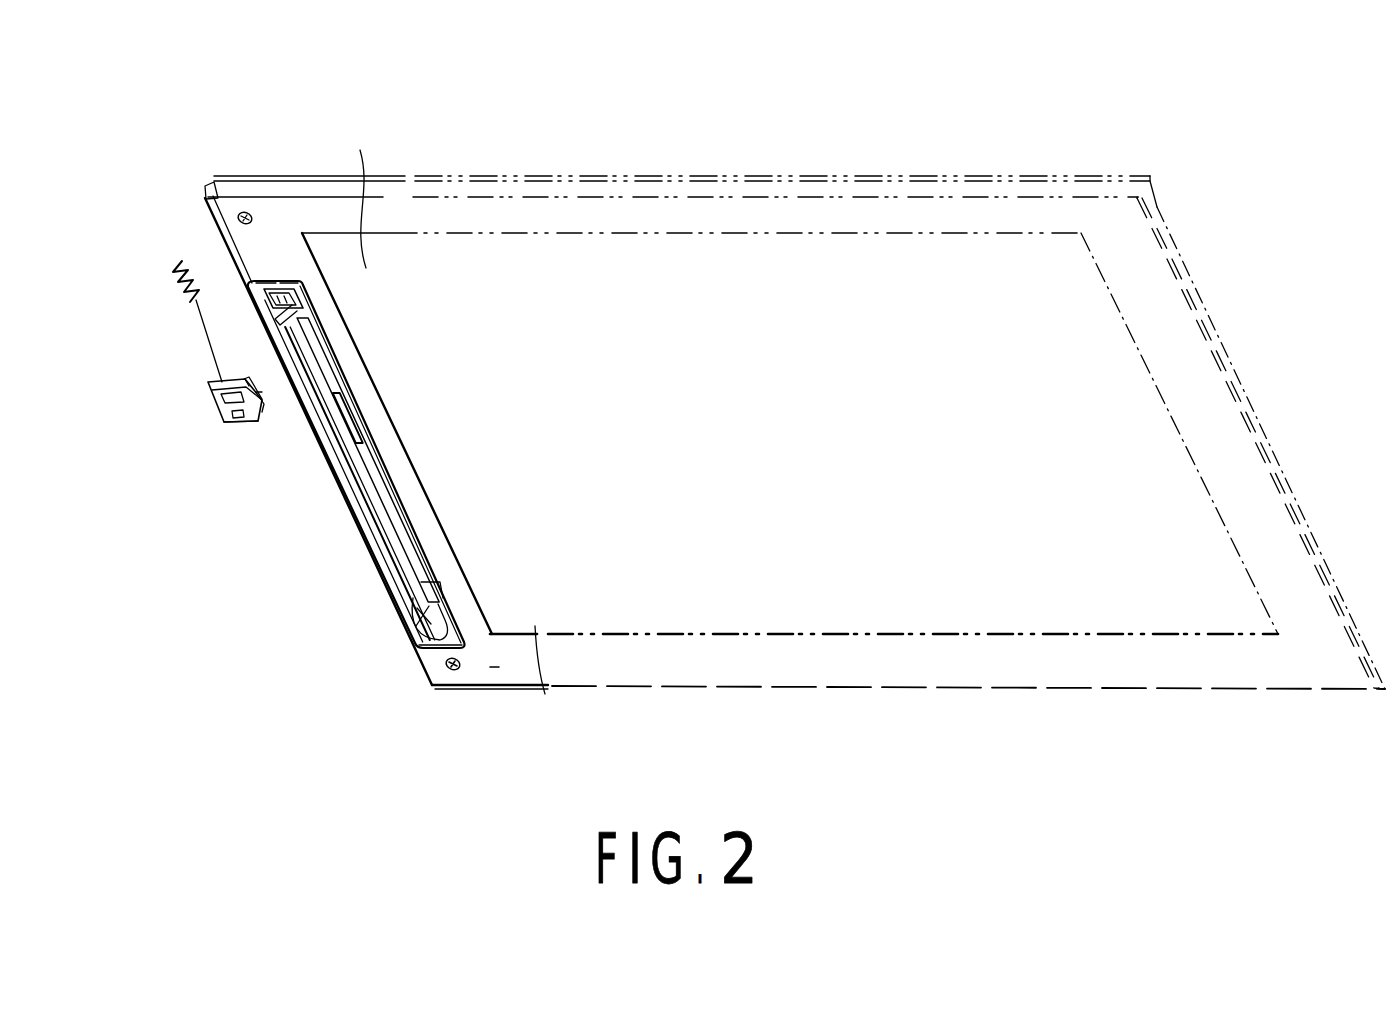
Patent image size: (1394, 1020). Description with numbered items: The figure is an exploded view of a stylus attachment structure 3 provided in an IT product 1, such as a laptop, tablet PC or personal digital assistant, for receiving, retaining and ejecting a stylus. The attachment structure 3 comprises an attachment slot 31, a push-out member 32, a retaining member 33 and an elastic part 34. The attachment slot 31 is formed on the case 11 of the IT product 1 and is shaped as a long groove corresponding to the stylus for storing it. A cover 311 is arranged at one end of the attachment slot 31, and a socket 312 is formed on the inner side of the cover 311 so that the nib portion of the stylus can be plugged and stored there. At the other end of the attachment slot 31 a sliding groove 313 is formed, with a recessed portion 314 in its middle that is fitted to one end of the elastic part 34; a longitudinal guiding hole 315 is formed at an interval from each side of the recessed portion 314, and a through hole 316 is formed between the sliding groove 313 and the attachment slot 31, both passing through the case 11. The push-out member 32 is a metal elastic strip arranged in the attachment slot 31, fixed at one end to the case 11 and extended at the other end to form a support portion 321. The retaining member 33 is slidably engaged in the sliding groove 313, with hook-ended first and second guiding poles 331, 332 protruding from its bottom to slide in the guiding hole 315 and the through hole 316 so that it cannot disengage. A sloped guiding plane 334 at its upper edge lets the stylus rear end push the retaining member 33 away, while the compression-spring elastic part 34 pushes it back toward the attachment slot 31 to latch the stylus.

The IT product 1 is at (391, 132).
The case 11 is at (523, 658).
The stylus attachment structure 3 is at (190, 374).
The attachment slot 31 is at (387, 518).
The cover 311 is at (417, 645).
The socket 312 is at (420, 588).
The sliding groove 313 is at (272, 280).
The recessed portion 314 is at (288, 280).
The guiding hole 315 is at (210, 185).
The through hole 316 is at (295, 323).
The push-out member 32 is at (350, 398).
The support portion 321 is at (363, 427).
The retaining member 33 is at (220, 405).
The first guiding pole 331 is at (247, 377).
The second guiding pole 332 is at (265, 413).
The guiding plane 334 is at (240, 422).
The elastic part 34 is at (173, 267).